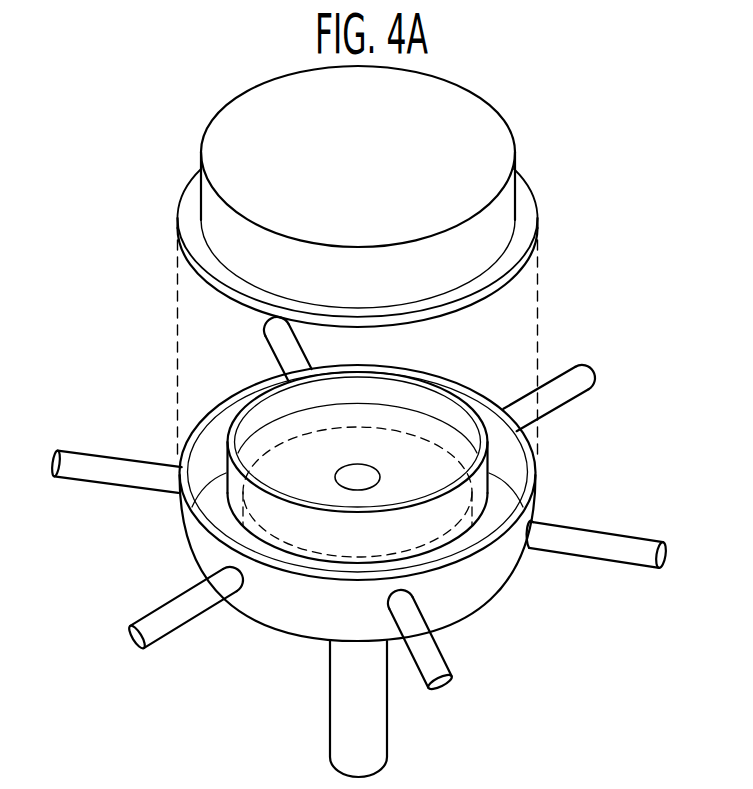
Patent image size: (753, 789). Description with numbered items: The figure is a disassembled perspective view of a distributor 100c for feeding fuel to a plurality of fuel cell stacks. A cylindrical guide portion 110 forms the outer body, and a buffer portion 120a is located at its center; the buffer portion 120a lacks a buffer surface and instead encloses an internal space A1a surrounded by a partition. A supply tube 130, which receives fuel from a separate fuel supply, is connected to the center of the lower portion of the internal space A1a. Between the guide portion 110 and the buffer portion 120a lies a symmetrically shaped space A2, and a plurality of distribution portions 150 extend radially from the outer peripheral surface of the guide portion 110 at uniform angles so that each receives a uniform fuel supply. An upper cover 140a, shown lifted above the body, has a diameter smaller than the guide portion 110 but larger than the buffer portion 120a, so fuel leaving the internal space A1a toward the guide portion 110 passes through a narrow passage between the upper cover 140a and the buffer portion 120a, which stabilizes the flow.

The distributor 100c is at (80, 140).
The guide portion 110 is at (335, 503).
The buffer portion 120a is at (348, 470).
The supply tube 130 is at (380, 737).
The upper cover 140a is at (532, 208).
The distribution portions 150 is at (633, 543).
The internal space A1a is at (403, 442).
The symmetrically shaped space A2 is at (221, 472).